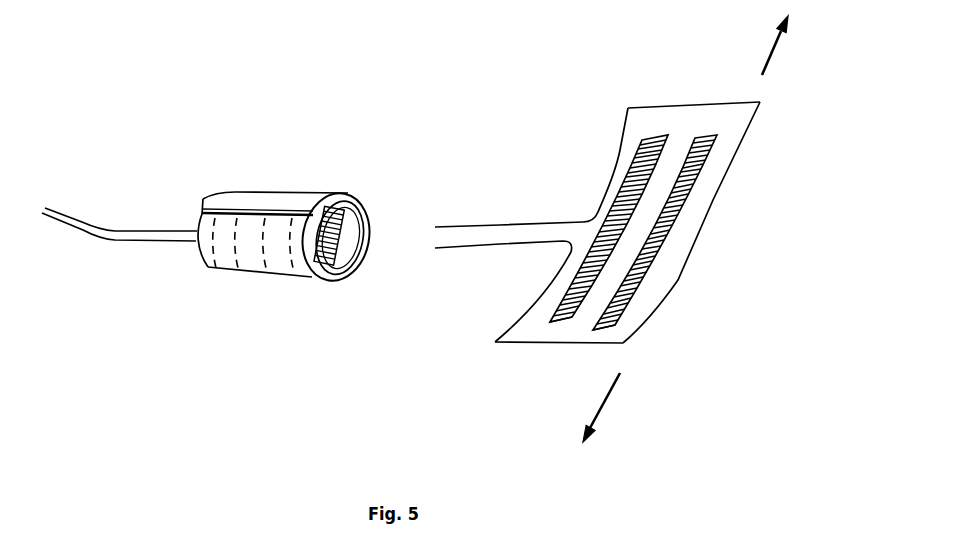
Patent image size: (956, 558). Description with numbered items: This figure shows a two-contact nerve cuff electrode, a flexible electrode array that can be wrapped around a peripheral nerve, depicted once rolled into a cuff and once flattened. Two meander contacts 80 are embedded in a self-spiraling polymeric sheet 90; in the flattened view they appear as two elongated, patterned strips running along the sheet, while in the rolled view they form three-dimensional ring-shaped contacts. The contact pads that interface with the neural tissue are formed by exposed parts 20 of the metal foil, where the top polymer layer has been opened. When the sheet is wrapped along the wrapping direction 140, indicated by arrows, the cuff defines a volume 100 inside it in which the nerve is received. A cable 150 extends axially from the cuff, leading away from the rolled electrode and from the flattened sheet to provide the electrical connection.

The cable 150 is at (103, 229).
The self-spiraling polymeric sheet 90 is at (366, 210).
The meander contacts 80 is at (283, 253).
The volume 100 is at (343, 255).
The part of the metal foil 20 is at (594, 330).
The wrapping direction 140 is at (706, 229).